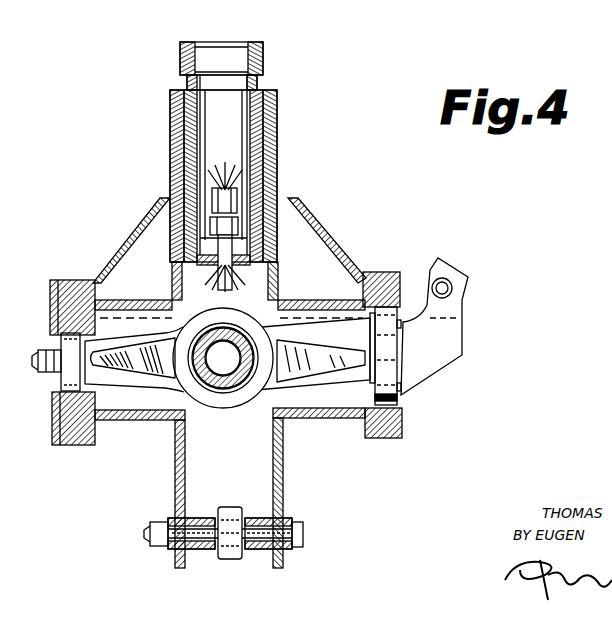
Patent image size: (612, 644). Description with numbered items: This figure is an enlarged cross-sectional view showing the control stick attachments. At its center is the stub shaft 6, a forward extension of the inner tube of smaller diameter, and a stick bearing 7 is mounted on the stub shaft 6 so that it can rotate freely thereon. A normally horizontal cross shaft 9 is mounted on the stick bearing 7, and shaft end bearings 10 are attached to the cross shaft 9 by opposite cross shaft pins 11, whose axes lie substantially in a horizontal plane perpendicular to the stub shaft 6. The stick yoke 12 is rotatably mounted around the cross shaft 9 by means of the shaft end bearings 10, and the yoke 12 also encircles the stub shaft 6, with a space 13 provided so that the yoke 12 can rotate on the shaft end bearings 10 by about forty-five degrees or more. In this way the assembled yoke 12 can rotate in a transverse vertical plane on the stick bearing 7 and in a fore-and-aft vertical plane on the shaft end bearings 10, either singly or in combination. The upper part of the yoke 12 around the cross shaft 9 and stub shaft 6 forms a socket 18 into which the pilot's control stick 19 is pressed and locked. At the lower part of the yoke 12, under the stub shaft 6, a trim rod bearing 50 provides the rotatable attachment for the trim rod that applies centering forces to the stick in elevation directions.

The stub shaft 6 is at (250, 340).
The stick bearing 7 is at (232, 395).
The cross shaft 9 is at (338, 396).
The shaft end bearings 10 is at (60, 390).
The cross shaft pins 11 is at (44, 360).
The stick yoke 12 is at (358, 416).
The space 13 is at (234, 297).
The socket 18 is at (277, 165).
The pilot's control stick 19 is at (263, 62).
The trim rod bearing 50 is at (205, 553).